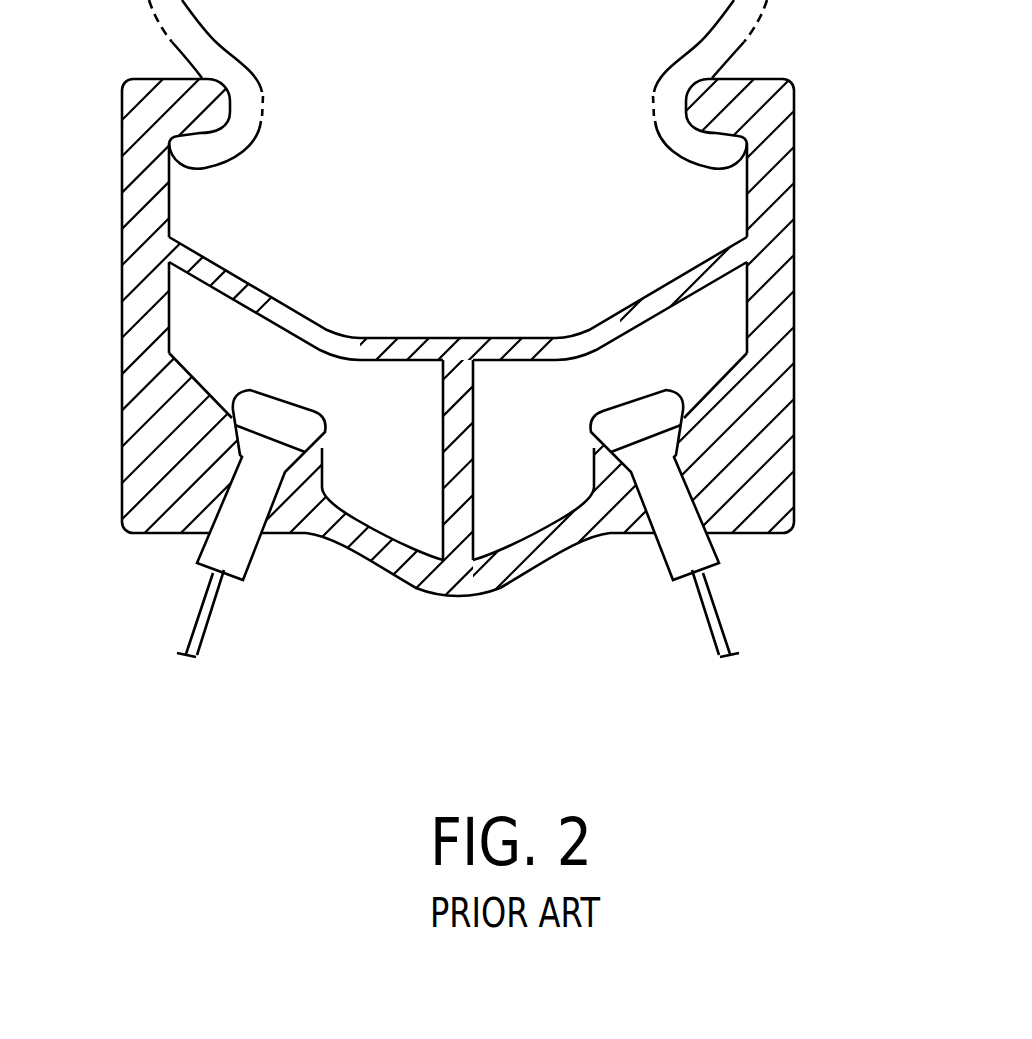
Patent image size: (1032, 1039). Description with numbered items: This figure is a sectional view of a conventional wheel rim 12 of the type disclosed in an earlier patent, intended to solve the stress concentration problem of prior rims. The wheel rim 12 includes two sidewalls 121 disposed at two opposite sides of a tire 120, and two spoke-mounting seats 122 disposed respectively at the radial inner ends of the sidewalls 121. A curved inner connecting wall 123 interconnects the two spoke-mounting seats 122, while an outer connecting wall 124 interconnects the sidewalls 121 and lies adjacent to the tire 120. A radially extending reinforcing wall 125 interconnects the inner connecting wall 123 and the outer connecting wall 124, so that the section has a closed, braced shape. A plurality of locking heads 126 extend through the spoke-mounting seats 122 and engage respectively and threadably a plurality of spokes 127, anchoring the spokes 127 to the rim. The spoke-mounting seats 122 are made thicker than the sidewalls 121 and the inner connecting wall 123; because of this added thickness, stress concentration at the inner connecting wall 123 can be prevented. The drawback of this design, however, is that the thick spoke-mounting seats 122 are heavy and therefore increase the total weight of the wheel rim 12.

The wheel rim 12 is at (810, 262).
The tire 120 is at (742, 14).
The sidewalls 121 is at (122, 242).
The spoke-mounting seats 122 is at (170, 537).
The inner connecting wall 123 is at (398, 580).
The outer connecting wall 124 is at (399, 338).
The reinforcing wall 125 is at (473, 473).
The locking heads 126 is at (255, 558).
The spokes 127 is at (210, 613).